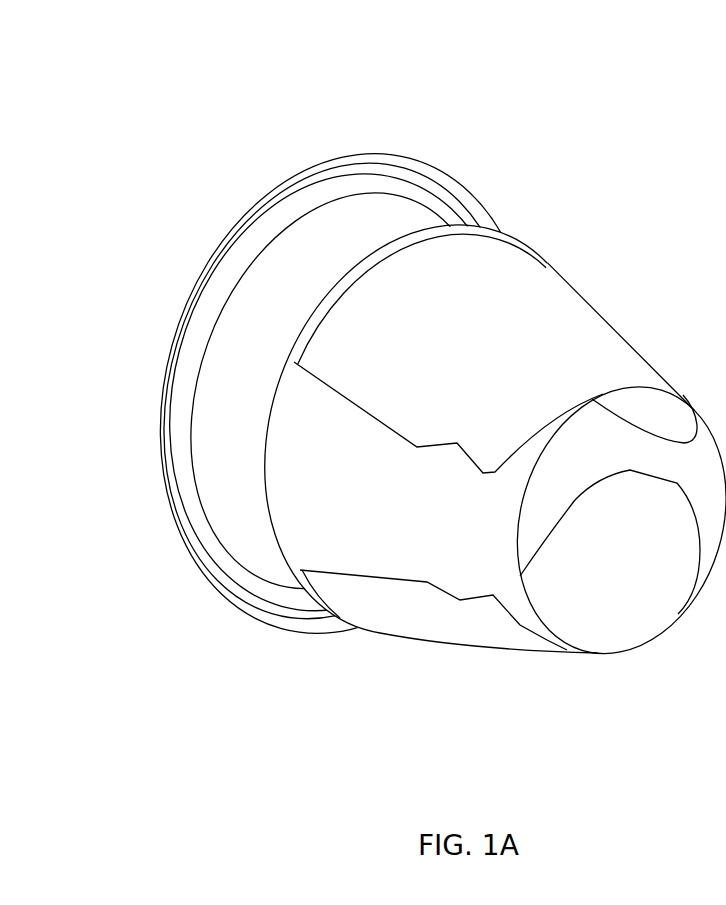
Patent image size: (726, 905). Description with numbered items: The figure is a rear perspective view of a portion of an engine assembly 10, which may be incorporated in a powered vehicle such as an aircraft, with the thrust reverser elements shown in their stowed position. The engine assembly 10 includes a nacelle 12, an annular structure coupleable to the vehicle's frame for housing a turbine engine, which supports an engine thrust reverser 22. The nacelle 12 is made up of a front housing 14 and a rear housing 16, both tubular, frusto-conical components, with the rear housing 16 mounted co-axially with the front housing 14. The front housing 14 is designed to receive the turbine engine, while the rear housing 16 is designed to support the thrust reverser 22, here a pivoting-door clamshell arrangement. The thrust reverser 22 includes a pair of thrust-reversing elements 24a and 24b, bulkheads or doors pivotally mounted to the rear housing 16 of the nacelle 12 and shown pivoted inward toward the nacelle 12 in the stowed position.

The engine assembly 10 is at (417, 387).
The nacelle 12 is at (158, 333).
The front housing 14 is at (217, 488).
The rear housing 16 is at (362, 545).
The engine thrust reverser 22 is at (572, 325).
The thrust-reversing element 24a is at (522, 263).
The thrust-reversing element 24b is at (453, 627).